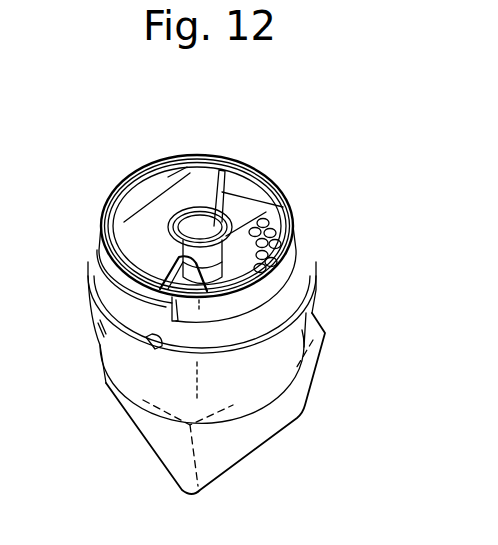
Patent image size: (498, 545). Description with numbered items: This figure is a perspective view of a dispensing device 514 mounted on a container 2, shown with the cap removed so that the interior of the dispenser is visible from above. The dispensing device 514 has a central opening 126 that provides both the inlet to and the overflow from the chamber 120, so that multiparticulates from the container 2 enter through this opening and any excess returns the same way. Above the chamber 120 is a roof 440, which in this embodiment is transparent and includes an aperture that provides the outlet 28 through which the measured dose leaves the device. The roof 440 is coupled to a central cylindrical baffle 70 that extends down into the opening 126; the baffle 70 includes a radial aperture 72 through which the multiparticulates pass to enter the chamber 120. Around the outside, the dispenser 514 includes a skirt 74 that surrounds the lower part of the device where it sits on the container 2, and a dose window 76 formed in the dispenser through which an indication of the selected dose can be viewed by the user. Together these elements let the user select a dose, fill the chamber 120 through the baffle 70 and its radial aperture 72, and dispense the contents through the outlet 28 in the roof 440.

The container 2 is at (233, 440).
The outlet 28 is at (168, 264).
The central cylindrical baffle 70 is at (201, 218).
The radial aperture 72 is at (216, 225).
The skirt 74 is at (263, 363).
The dose window 76 is at (148, 340).
The chamber 120 is at (243, 253).
The central opening 126 is at (200, 262).
The roof 440 is at (142, 225).
The dispensing device 514 is at (323, 162).